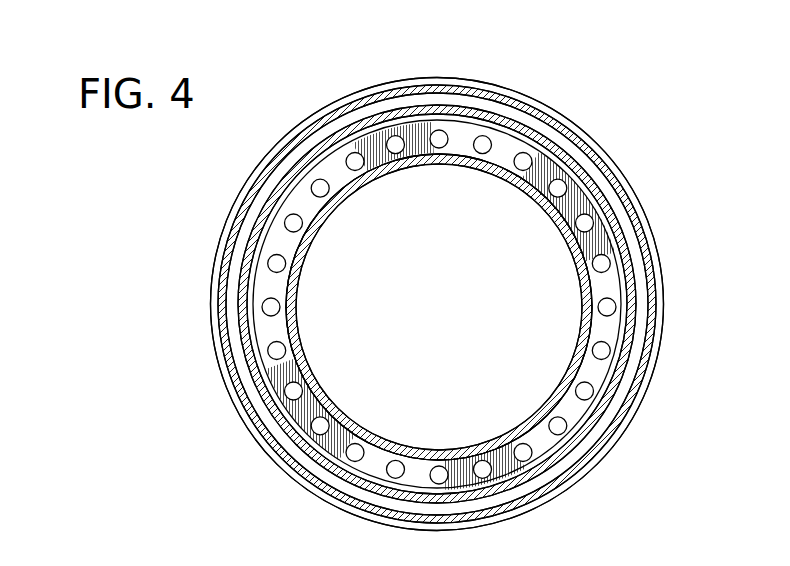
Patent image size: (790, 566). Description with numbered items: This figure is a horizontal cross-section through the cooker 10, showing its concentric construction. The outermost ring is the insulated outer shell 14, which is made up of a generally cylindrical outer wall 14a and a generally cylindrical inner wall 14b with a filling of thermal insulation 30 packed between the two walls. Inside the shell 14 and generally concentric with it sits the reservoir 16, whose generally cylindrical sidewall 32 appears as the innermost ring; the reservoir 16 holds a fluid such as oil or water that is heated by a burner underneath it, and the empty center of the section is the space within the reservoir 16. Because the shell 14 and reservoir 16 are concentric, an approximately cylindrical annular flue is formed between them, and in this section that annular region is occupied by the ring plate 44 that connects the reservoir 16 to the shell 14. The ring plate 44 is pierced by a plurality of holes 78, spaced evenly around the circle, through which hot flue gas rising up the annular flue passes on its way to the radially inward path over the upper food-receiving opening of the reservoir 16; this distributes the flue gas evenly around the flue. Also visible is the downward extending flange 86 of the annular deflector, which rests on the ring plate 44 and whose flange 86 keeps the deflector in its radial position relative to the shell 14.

The cooker 10 is at (730, 116).
The insulated outer shell 14 is at (634, 207).
The outer wall 14a is at (615, 443).
The inner wall 14b is at (439, 307).
The reservoir 16 is at (594, 327).
The thermal insulation 30 is at (632, 397).
The sidewall 32 is at (535, 178).
The ring plate 44 is at (504, 154).
The holes 78 is at (260, 308).
The downward extending flange 86 is at (232, 404).